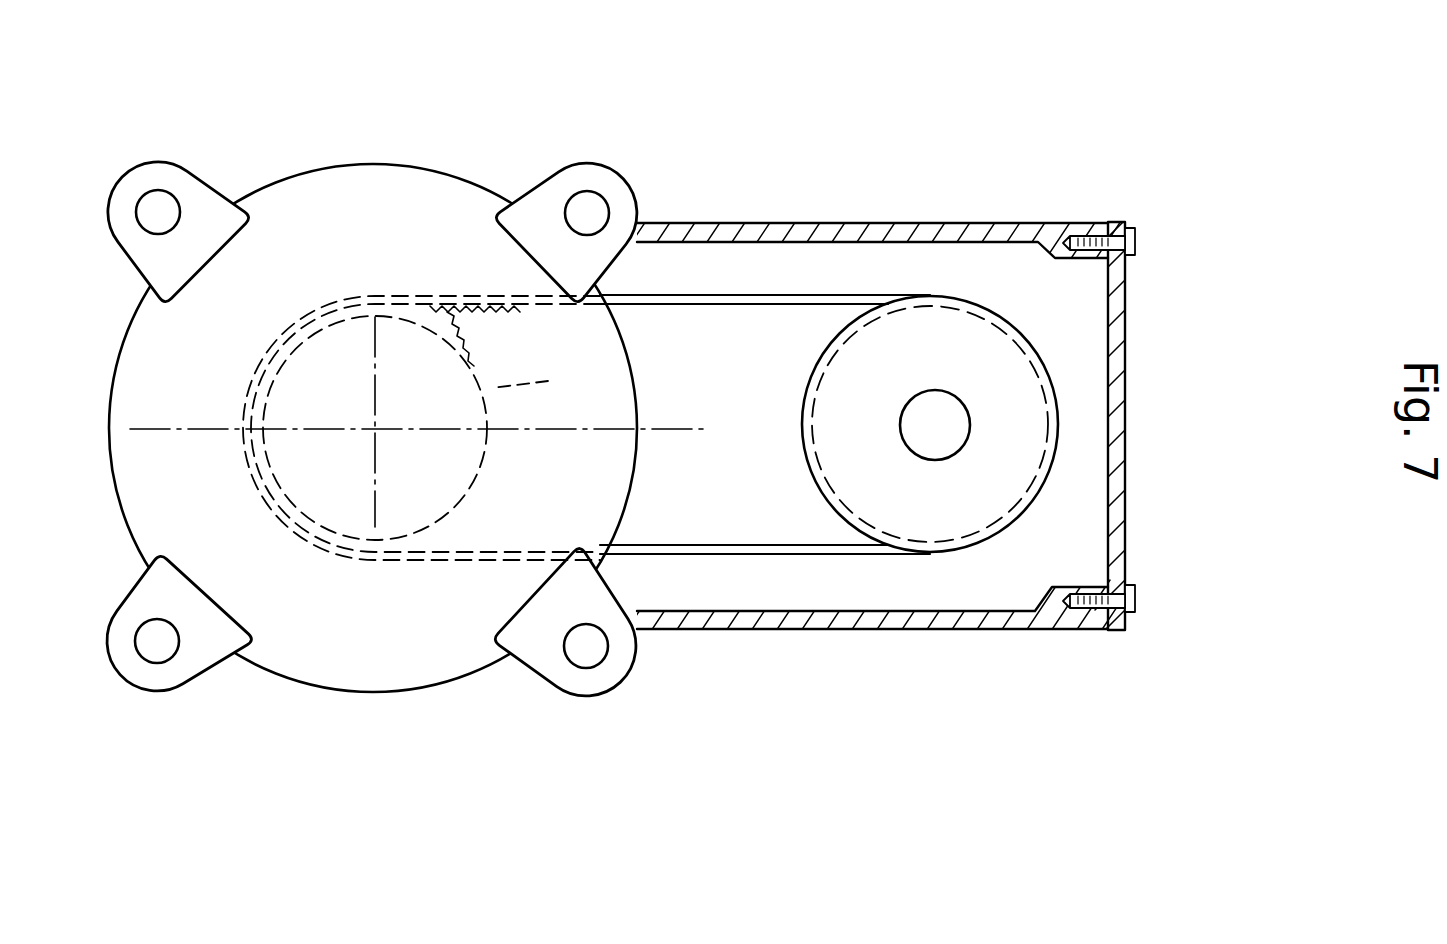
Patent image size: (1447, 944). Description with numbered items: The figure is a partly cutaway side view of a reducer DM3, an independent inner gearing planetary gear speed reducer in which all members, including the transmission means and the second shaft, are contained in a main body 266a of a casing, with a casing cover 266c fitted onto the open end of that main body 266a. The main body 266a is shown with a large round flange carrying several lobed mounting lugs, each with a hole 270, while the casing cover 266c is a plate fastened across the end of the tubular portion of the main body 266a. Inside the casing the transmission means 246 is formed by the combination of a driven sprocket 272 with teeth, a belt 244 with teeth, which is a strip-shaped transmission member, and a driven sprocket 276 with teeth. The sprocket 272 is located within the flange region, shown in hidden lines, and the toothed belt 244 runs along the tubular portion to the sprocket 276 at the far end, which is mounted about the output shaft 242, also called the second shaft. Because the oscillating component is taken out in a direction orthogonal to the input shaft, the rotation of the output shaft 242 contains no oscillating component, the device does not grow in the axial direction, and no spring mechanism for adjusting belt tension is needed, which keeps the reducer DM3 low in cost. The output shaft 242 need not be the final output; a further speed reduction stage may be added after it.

The main body of casing 266a is at (455, 202).
The casing cover 266c is at (1128, 350).
The mounting hole 270 is at (163, 652).
The driven sprocket with teeth 272 is at (423, 428).
The transmission means 246 is at (790, 280).
The belt with teeth 244 is at (757, 552).
The driven sprocket with teeth 276 is at (998, 535).
The output shaft (second shaft) 242 is at (915, 442).
The reducer DM3 is at (973, 192).